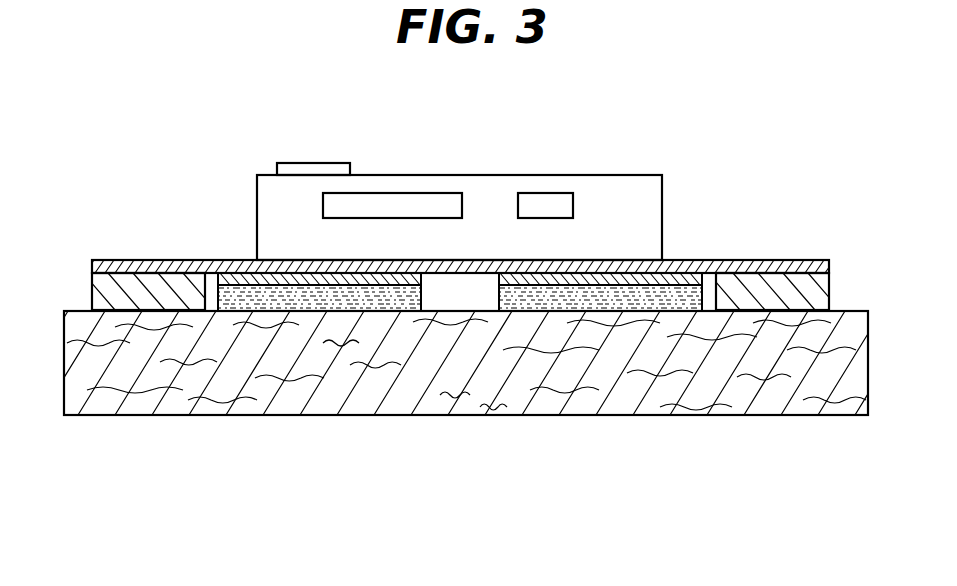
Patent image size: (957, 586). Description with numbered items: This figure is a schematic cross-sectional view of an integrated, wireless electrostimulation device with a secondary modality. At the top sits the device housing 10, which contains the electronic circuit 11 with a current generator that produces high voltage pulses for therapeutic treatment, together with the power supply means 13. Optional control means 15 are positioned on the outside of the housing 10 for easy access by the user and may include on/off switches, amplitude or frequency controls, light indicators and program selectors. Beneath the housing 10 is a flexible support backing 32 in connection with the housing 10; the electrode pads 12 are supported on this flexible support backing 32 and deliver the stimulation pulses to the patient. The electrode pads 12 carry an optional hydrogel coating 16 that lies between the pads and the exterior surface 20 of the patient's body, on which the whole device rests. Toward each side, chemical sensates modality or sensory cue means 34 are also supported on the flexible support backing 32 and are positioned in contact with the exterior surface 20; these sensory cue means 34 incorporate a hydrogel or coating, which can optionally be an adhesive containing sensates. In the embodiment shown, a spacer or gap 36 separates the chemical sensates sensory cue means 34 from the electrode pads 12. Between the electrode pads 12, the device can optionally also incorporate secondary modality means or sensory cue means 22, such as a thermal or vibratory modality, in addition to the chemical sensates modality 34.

The housing 10 is at (641, 185).
The electronic circuit 11 is at (395, 203).
The power supply means 13 is at (545, 203).
The control means 15 is at (312, 162).
The electrode pads 12 is at (233, 280).
The hydrogel coating 16 is at (276, 298).
The exterior surface of the body 20 is at (507, 378).
The secondary modality means 22 is at (459, 288).
The flexible support backing 32 is at (155, 267).
The chemical sensates sensory cue means 34 is at (123, 292).
The gap 36 is at (212, 300).